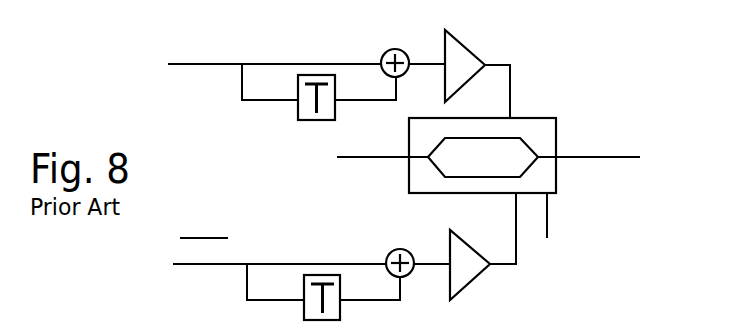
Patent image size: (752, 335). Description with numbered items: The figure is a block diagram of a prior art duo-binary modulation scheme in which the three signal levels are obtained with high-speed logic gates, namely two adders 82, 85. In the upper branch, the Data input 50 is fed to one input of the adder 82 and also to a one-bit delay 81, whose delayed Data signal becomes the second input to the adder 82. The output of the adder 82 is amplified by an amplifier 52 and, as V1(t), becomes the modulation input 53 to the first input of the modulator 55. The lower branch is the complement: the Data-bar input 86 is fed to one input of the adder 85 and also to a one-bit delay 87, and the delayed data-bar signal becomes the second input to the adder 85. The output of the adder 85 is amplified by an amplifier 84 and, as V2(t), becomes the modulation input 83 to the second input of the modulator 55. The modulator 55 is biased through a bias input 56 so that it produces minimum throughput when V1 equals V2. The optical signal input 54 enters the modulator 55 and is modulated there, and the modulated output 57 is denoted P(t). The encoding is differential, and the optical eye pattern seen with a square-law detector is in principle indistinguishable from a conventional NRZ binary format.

The Data input 50 is at (215, 68).
The one-bit delay 81 is at (298, 115).
The adder 82 is at (382, 55).
The amplifier 52 is at (468, 54).
The modulation input 53 is at (508, 80).
The optical signal input 54 is at (378, 163).
The modulator 55 is at (408, 141).
The bias 56 is at (587, 226).
The modulated output 57 is at (580, 162).
The modulation input 83 is at (514, 210).
The amplifier 84 is at (480, 253).
The adder 85 is at (386, 257).
The Data-bar input 86 is at (222, 268).
The one-bit delay 87 is at (303, 313).